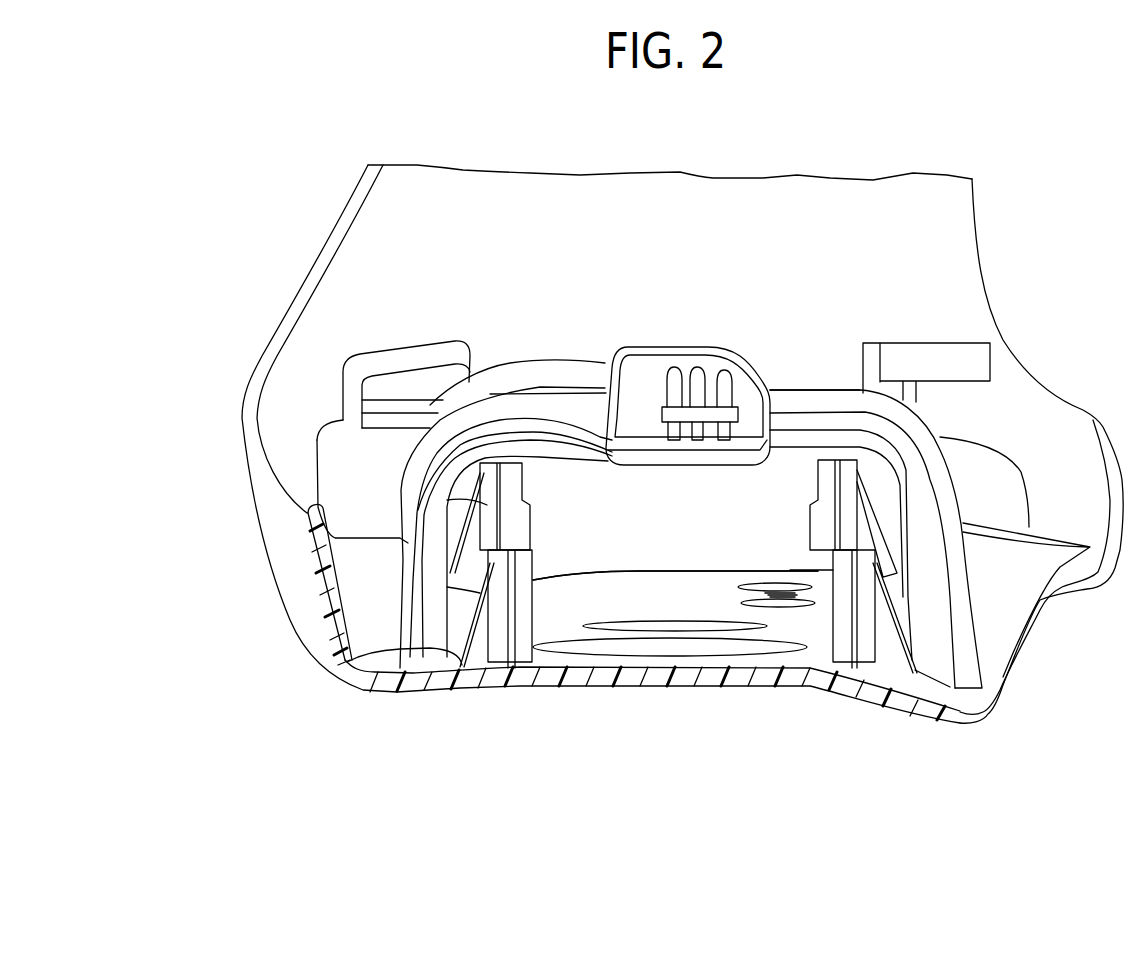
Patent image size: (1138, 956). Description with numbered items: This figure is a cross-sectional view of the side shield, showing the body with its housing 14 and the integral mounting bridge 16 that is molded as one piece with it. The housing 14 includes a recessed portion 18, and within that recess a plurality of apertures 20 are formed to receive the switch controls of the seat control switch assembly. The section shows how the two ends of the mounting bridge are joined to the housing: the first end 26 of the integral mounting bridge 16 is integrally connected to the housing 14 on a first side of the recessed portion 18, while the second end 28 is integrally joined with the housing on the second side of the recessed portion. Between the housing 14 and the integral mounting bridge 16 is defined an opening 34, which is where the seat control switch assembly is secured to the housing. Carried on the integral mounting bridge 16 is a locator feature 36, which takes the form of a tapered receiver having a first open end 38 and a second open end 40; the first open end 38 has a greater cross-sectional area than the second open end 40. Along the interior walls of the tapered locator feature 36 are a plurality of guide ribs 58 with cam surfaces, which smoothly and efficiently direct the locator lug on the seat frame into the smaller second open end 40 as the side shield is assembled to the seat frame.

The housing 14 is at (983, 720).
The integral mounting bridge 16 is at (495, 422).
The recessed portion 18 is at (700, 677).
The apertures 20 is at (677, 628).
The first end 26 is at (395, 627).
The second end 28 is at (843, 630).
The opening 34 is at (772, 490).
The locator feature 36 is at (752, 330).
The first open end 38 is at (678, 347).
The second open end 40 is at (715, 407).
The guide ribs 58 is at (730, 390).